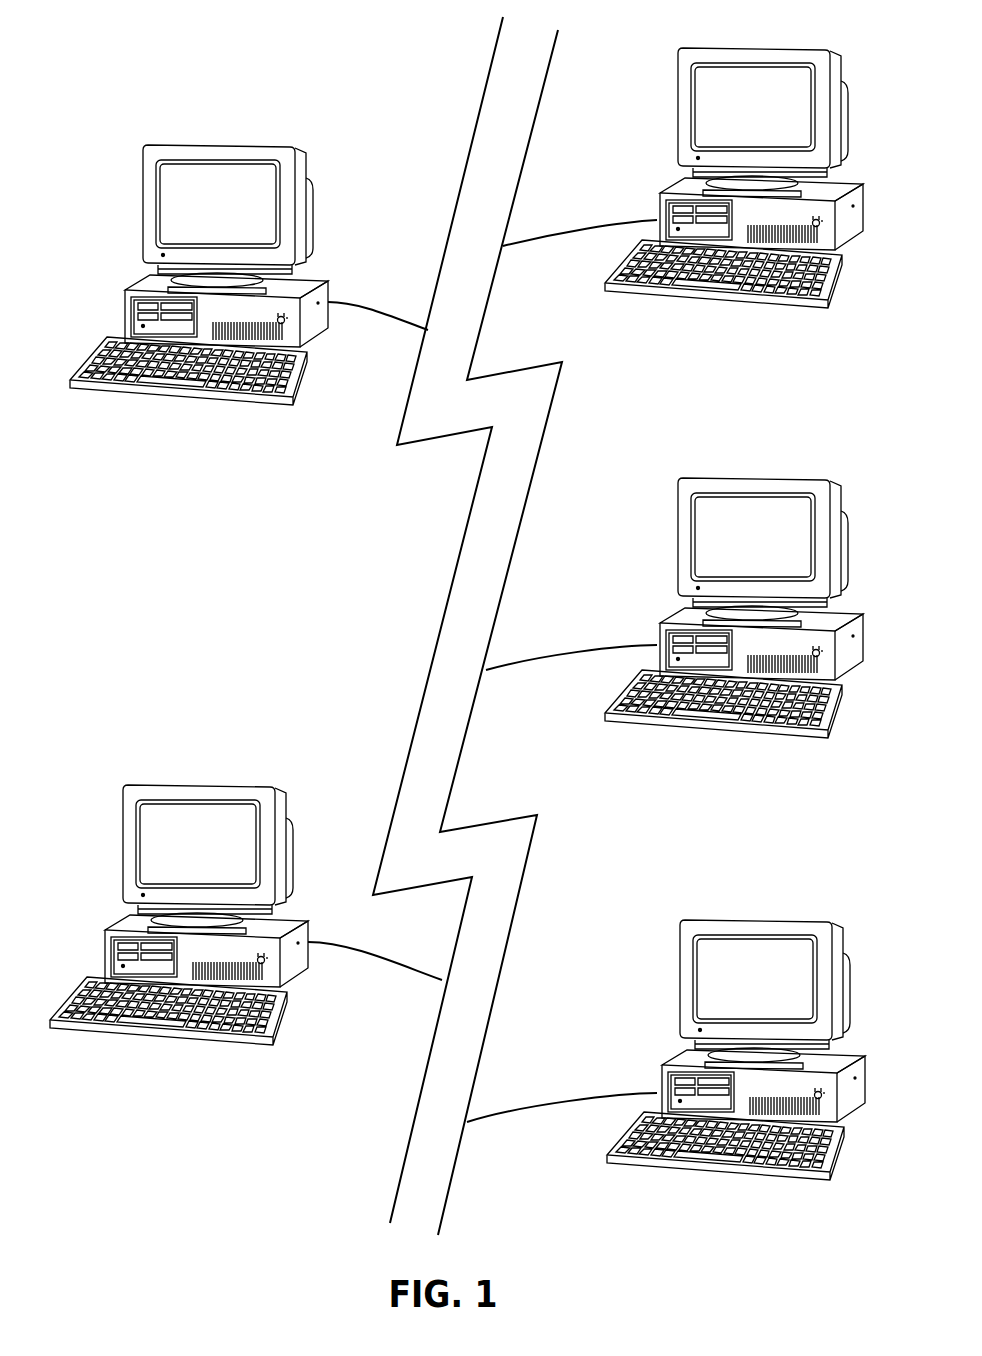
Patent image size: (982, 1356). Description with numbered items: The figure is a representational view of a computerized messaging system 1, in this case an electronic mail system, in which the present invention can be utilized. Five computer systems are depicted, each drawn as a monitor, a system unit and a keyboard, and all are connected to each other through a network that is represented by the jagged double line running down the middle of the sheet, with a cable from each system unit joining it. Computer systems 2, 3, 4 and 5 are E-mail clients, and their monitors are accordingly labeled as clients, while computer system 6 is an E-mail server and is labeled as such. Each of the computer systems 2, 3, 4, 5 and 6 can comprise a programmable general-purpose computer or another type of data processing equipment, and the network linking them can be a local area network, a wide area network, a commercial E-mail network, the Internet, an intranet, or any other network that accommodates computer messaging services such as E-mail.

The computerized messaging system 1 is at (447, 62).
The computer system 2 is at (331, 153).
The computer system 3 is at (306, 790).
The computer system 4 is at (858, 70).
The computer system 5 is at (858, 493).
The computer system 6 is at (860, 927).